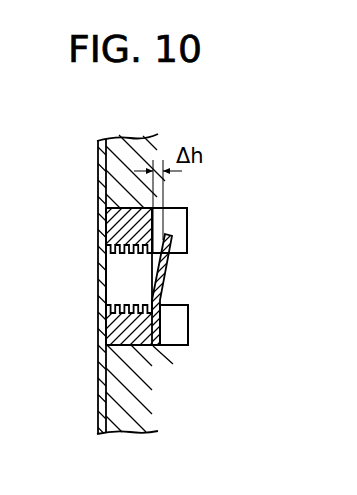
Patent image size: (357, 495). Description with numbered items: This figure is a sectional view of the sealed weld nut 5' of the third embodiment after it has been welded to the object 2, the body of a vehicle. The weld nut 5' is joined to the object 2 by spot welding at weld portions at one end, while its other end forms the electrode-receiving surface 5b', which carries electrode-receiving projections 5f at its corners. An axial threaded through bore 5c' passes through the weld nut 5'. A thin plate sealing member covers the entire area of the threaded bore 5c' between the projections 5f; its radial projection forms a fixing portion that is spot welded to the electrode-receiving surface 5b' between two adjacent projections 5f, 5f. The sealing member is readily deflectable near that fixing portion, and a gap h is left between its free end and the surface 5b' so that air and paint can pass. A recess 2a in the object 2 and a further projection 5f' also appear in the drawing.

The object 2 is at (99, 168).
The groove in base member 2a is at (128, 273).
The electrode-receiving surface 5b' is at (181, 222).
The electrode-receiving projections 5f is at (198, 230).
The axial threaded through bore 5c' is at (100, 321).
The flange portion of lower block 5f' is at (205, 335).
The sealed weld nut 5' is at (149, 370).